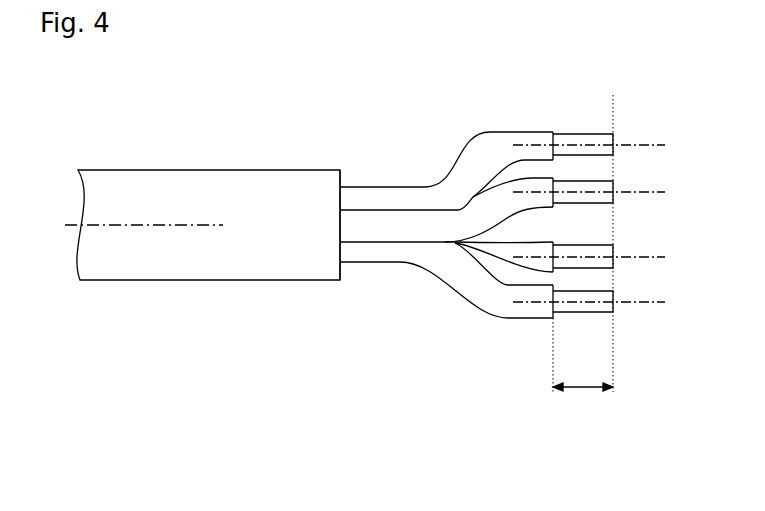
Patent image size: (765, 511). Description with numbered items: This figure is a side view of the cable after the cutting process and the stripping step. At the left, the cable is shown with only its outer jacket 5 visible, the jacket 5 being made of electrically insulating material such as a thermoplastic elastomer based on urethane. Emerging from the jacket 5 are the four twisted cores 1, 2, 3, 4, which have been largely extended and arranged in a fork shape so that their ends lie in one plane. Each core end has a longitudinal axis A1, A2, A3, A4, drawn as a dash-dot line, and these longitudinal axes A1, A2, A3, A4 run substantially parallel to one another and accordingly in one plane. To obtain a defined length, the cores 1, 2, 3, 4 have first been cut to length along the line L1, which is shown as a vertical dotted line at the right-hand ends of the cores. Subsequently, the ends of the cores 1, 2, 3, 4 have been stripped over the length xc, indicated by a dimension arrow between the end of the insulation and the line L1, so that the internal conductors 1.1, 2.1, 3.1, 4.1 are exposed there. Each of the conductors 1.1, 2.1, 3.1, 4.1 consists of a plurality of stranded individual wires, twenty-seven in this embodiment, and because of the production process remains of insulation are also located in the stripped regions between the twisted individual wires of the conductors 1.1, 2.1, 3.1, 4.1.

The outer jacket 5 is at (116, 183).
The core 4 is at (362, 200).
The core 1 is at (363, 253).
The core 3 is at (400, 225).
The core 2 is at (505, 258).
The conductor 4.1 is at (585, 142).
The conductor 3.1 is at (567, 185).
The conductor 2.1 is at (614, 265).
The conductor 1.1 is at (580, 306).
The longitudinal axis A4 is at (660, 145).
The longitudinal axis A3 is at (660, 192).
The longitudinal axis A2 is at (660, 257).
The longitudinal axis A1 is at (660, 302).
The line L1 is at (614, 383).
The length xc is at (583, 369).